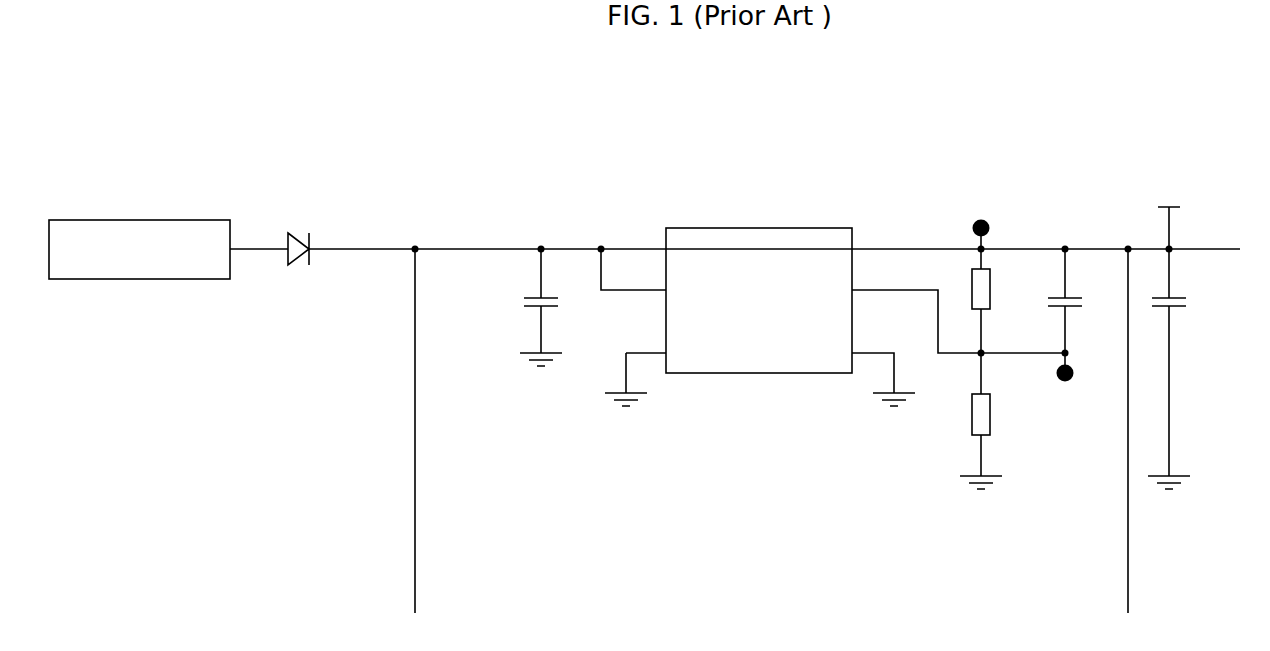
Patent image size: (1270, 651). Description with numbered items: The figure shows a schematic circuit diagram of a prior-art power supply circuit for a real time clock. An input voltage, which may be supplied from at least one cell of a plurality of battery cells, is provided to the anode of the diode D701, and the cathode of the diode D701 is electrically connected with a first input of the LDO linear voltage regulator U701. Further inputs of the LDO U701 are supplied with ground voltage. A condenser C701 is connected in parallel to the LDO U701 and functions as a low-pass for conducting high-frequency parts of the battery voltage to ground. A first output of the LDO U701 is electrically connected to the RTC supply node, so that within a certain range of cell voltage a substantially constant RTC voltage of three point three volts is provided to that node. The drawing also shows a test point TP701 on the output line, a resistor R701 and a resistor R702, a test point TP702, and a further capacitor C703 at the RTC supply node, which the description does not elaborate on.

The diode D701 is at (299, 234).
The condenser C701 is at (818, 327).
The LDO linear voltage regulator U701 is at (833, 323).
The test point TP701 is at (983, 217).
The resistor R701 is at (1005, 301).
The test point TP702 is at (1082, 384).
The resistor R702 is at (999, 441).
The capacitor C703 is at (1177, 349).